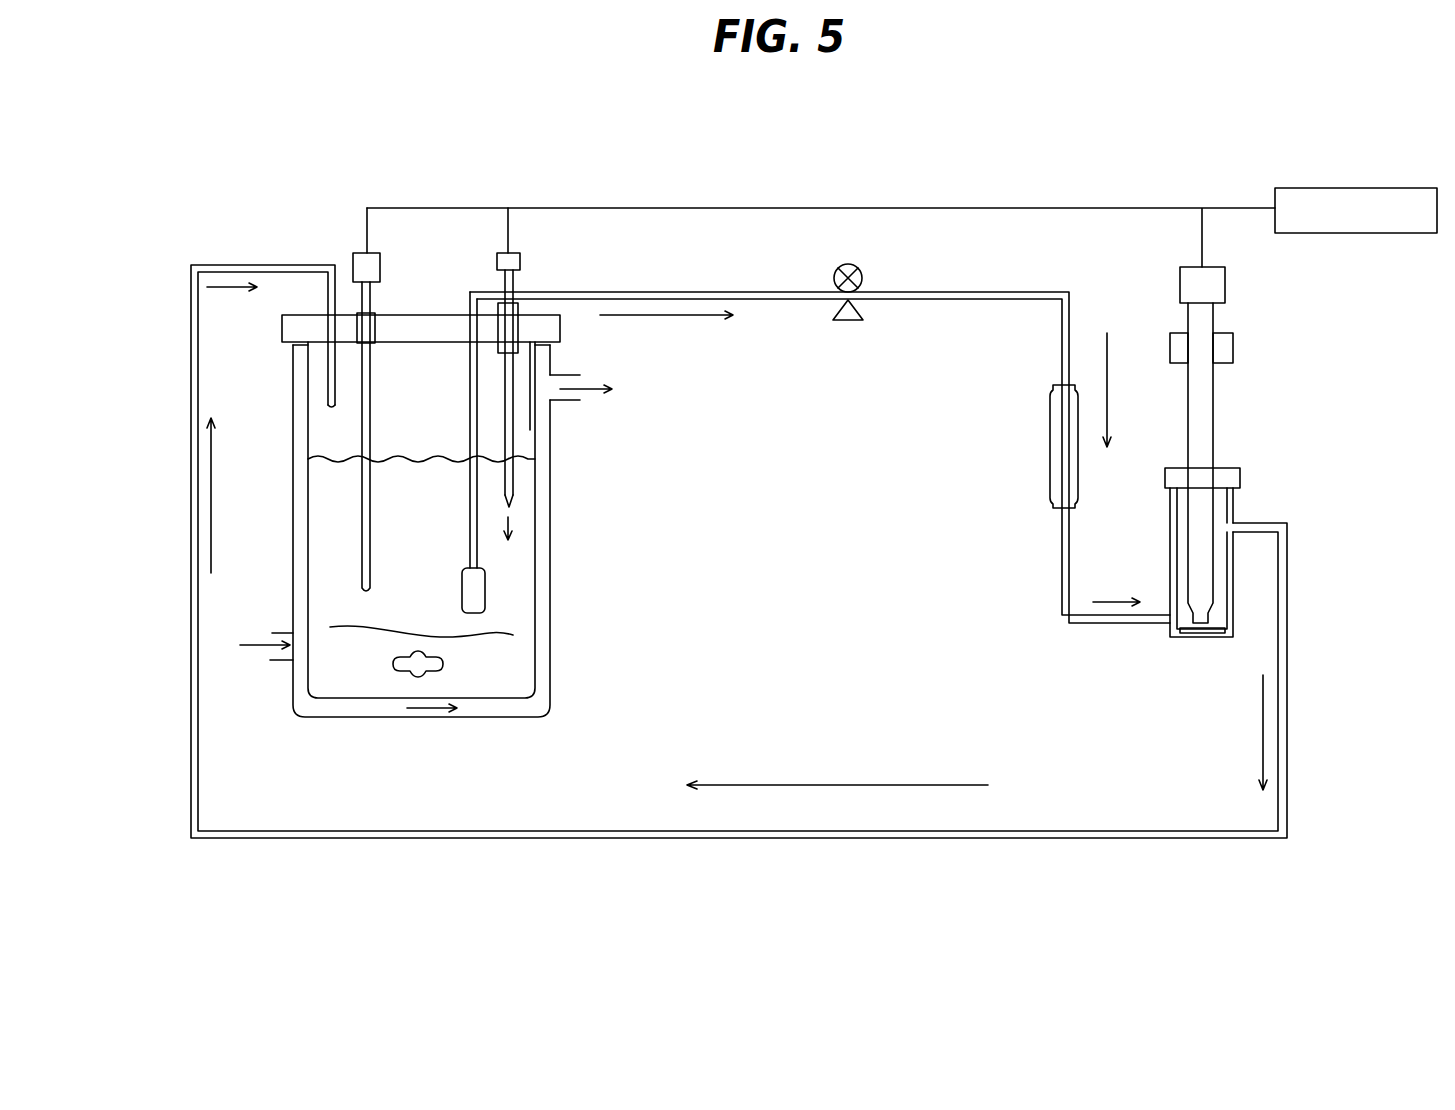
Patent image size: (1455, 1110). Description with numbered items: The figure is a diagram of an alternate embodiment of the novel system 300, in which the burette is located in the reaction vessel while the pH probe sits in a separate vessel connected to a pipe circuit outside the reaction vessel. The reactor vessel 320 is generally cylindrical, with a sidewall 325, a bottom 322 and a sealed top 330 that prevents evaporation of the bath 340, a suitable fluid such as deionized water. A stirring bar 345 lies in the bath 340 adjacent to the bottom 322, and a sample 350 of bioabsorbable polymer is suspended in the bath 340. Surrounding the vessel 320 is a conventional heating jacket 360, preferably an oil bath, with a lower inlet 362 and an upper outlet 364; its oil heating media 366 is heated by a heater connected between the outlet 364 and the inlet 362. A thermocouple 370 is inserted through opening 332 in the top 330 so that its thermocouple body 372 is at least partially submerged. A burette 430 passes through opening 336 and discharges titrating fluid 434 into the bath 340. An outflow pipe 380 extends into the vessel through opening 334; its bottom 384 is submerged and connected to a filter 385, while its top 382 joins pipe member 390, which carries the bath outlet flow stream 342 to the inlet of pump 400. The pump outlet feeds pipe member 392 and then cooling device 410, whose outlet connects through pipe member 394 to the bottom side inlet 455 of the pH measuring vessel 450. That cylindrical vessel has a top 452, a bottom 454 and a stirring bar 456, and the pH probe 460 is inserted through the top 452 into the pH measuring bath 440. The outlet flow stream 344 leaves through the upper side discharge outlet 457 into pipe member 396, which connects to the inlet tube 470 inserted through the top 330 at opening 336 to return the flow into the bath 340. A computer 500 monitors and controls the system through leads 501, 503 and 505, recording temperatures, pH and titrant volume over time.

The system 300 is at (693, 147).
The reactor vessel 320 is at (590, 526).
The bottom 322 is at (477, 718).
The sidewall 325 is at (310, 417).
The sealed top 330 is at (389, 251).
The opening 332 is at (352, 312).
The opening 334 is at (467, 313).
The opening 336 is at (325, 313).
The bath 340 is at (328, 538).
The bath outlet flow stream 342 is at (658, 310).
The outlet flow stream 344 is at (220, 285).
The stirring bar 345 is at (447, 665).
The sample 350 is at (380, 627).
The heating jacket 360 is at (552, 487).
The lower inlet 362 is at (275, 633).
The upper outlet 364 is at (565, 375).
The oil heating media 366 is at (590, 392).
The thermocouple 370 is at (355, 313).
The thermocouple body 372 is at (368, 393).
The outflow pipe 380 is at (470, 403).
The top 382 is at (470, 297).
The bottom 384 is at (480, 568).
The filter 385 is at (485, 595).
The pipe member 390 is at (750, 292).
The pipe member 392 is at (977, 290).
The pipe member 394 is at (1062, 560).
The pipe member 396 is at (190, 302).
The pump 400 is at (848, 264).
The cooling device 410 is at (1050, 492).
The burette 430 is at (517, 283).
The titrating fluid 434 is at (522, 520).
The pH measuring bath 440 is at (1180, 532).
The pH measuring vessel 450 is at (1235, 505).
The top 452 is at (1233, 468).
The bottom 454 is at (1227, 637).
The bottom side inlet 455 is at (1168, 623).
The stirring bar 456 is at (1197, 637).
The upper side discharge outlet 457 is at (1235, 518).
The pH probe 460 is at (1215, 403).
The inlet tube 470 is at (328, 358).
The computer 500 is at (1370, 187).
The lead 501 is at (1205, 245).
The lead 503 is at (510, 235).
The lead 505 is at (355, 250).